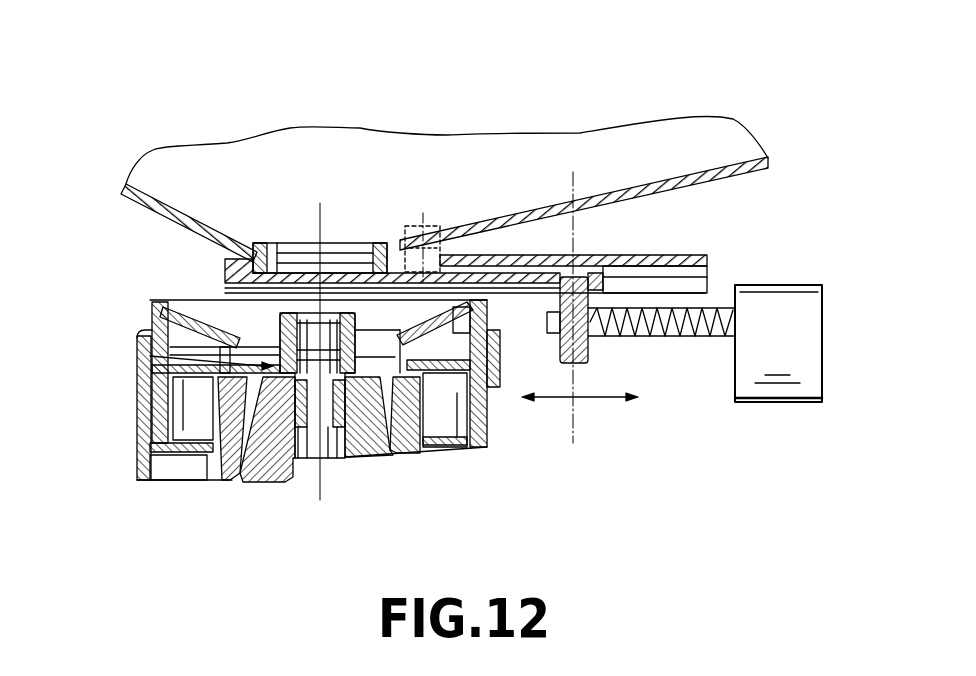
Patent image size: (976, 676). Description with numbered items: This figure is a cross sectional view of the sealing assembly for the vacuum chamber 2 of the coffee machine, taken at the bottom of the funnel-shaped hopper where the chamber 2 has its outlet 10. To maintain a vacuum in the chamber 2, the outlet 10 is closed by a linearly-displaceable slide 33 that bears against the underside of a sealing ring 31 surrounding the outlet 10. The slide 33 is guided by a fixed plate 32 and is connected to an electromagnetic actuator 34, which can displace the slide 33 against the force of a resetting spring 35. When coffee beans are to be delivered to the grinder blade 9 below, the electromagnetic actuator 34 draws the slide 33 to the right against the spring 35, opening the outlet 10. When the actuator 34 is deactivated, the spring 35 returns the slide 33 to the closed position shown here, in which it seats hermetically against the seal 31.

The chamber 2 is at (165, 192).
The grinder blade 9 is at (150, 356).
The outlet 10 is at (257, 243).
The sealing ring 31 is at (380, 245).
The fixed plate 32 is at (620, 255).
The slide 33 is at (600, 290).
The electromagnetic actuator 34 is at (795, 380).
The resetting spring 35 is at (694, 338).